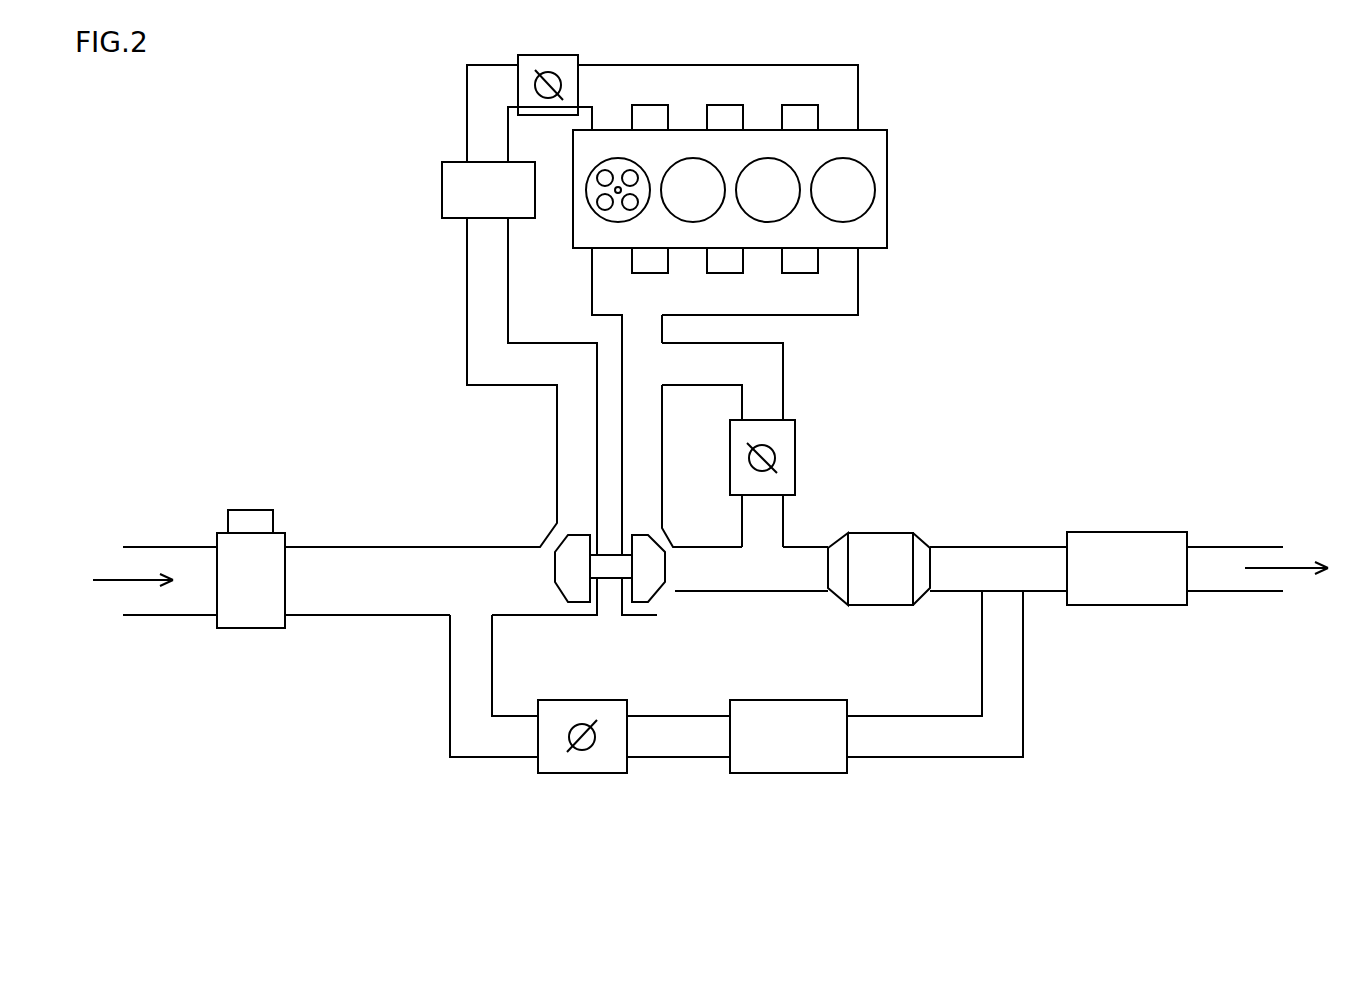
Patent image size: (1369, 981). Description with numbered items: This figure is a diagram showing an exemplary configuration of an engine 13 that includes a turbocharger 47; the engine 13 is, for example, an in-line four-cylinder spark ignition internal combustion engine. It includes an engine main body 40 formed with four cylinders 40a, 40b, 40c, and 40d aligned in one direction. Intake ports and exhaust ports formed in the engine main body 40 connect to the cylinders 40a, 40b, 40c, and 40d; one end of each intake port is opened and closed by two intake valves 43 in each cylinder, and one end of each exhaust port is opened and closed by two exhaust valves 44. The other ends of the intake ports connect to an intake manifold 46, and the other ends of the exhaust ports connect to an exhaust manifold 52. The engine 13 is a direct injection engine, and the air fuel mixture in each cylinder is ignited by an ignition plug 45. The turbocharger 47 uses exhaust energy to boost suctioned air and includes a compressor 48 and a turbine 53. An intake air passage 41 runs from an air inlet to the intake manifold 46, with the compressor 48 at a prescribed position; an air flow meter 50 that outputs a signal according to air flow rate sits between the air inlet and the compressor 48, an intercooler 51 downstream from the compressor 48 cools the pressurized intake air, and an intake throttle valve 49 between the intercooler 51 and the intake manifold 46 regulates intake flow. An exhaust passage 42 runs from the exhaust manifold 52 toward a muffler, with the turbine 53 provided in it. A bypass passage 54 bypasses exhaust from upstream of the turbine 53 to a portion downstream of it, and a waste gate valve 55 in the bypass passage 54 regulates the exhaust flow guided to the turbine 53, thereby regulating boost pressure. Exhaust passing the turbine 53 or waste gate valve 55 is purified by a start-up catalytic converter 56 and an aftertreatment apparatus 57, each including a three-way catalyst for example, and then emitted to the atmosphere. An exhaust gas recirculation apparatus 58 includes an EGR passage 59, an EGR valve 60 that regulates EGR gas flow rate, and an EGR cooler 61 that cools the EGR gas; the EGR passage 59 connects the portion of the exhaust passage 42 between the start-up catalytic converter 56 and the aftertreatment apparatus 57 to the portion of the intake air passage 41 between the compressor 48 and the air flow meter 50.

The engine 13 is at (1090, 278).
The engine main body 40 is at (888, 190).
The cylinder 40a is at (618, 158).
The cylinder 40b is at (693, 158).
The cylinder 40c is at (768, 158).
The cylinder 40d is at (843, 158).
The intake air passage 41 is at (465, 318).
The exhaust passage 42 is at (992, 545).
The intake valve 43 is at (597, 172).
The exhaust valve 44 is at (600, 206).
The ignition plug 45 is at (614, 190).
The intake manifold 46 is at (858, 77).
The turbocharger 47 is at (668, 578).
The compressor 48 is at (567, 583).
The intake throttle valve 49 is at (527, 87).
The air flow meter 50 is at (252, 622).
The intercooler 51 is at (450, 192).
The exhaust manifold 52 is at (850, 287).
The turbine 53 is at (645, 583).
The bypass passage 54 is at (788, 378).
The waste gate valve 55 is at (785, 442).
The start-up catalytic converter 56 is at (880, 543).
The aftertreatment apparatus 57 is at (1125, 540).
The exhaust gas recirculation apparatus 58 is at (1025, 690).
The EGR passage 59 is at (947, 745).
The EGR valve 60 is at (602, 762).
The EGR cooler 61 is at (793, 760).